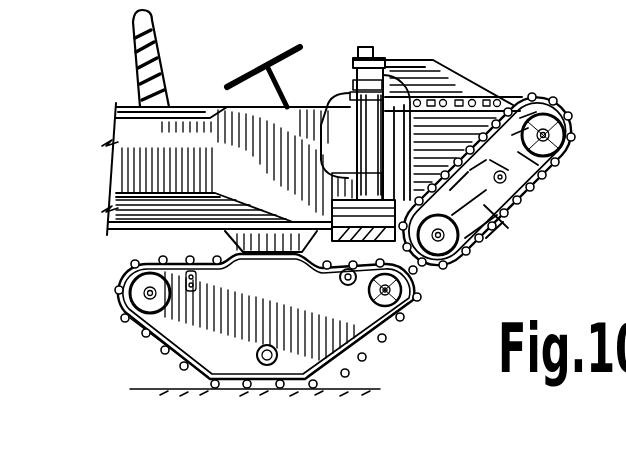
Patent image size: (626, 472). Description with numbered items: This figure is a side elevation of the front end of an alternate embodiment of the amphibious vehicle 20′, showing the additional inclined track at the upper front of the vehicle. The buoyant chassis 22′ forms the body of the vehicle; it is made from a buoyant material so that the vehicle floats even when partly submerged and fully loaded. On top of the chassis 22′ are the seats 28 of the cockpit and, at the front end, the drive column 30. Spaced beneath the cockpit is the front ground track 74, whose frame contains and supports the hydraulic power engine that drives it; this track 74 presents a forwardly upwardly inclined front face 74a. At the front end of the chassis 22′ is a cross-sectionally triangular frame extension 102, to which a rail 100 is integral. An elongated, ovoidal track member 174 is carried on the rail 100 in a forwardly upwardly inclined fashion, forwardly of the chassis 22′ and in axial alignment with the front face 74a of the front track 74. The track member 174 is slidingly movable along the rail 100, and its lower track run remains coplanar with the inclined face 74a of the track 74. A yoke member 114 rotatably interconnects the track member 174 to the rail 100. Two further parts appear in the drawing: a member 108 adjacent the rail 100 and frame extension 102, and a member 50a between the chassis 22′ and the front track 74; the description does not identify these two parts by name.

The chassis 22′ is at (96, 176).
The seats 28 is at (158, 60).
The drive column 30 is at (248, 70).
The pivot post housing 108 is at (327, 107).
The frame extension 102 is at (480, 103).
The rail 100 is at (524, 108).
The yoke member 114 is at (535, 152).
The track member 174 is at (513, 232).
The support frame 50a is at (230, 230).
The lower track unit 20′ is at (112, 310).
The track 74 is at (172, 352).
The front face 74a is at (352, 365).